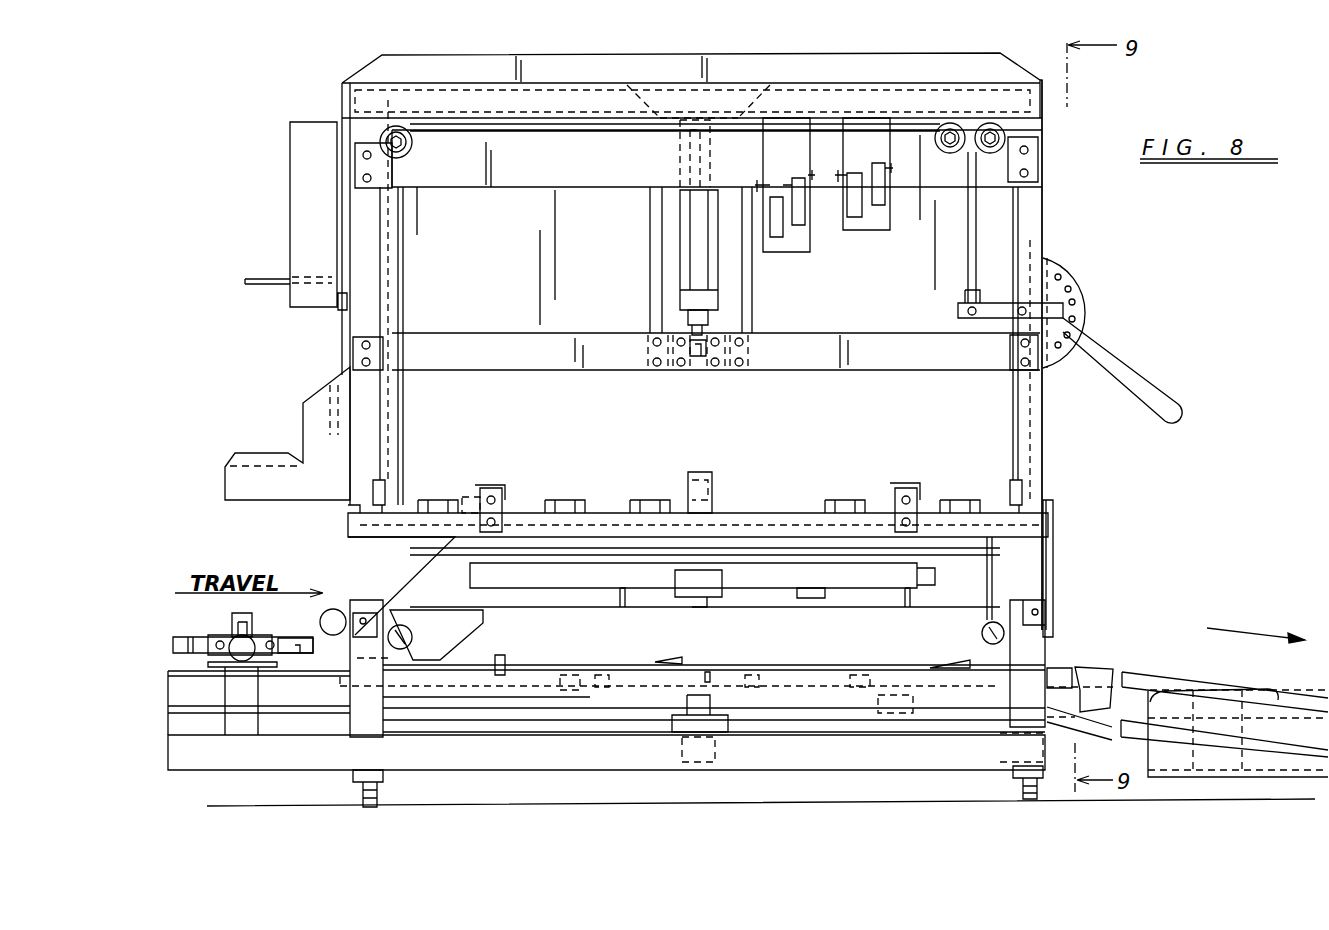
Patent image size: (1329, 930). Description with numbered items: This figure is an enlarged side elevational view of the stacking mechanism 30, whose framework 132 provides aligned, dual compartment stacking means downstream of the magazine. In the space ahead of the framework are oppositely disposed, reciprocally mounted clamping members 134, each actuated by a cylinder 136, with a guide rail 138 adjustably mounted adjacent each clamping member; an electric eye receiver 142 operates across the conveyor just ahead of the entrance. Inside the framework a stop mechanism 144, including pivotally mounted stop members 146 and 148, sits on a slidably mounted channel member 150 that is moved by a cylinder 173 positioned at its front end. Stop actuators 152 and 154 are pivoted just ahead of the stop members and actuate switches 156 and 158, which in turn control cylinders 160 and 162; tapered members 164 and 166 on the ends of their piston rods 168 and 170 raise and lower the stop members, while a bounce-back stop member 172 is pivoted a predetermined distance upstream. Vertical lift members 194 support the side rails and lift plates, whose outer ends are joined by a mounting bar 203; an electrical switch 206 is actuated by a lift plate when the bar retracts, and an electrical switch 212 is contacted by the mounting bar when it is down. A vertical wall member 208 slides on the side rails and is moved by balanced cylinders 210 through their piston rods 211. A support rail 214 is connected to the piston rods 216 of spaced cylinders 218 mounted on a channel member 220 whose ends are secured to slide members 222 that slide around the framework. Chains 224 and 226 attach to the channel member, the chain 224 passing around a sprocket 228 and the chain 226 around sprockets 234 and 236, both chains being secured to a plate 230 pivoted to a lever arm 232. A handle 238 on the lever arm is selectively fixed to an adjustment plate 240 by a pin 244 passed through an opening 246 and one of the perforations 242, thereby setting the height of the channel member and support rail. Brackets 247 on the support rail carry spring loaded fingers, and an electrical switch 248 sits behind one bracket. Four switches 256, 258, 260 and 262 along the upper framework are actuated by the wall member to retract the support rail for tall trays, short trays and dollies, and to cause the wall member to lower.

The stacking mechanism 30 is at (1070, 114).
The framework 132 is at (1042, 62).
The clamping member 134 is at (192, 634).
The hydraulic or pneumatic cylinder 136 is at (237, 645).
The guide rail 138 is at (318, 642).
The receiver 142 is at (335, 608).
The stop mechanism 144 is at (811, 655).
The stop member 146 is at (690, 677).
The stop member 148 is at (1020, 665).
The channel member 150 is at (530, 717).
The stop actuator 152 is at (680, 660).
The stop actuator 154 is at (955, 662).
The switch 156 is at (592, 668).
The switch 158 is at (850, 673).
The hydraulic or pneumatic cylinder 160 is at (762, 693).
The hydraulic or pneumatic cylinder 162 is at (1047, 675).
The tapered member 164 is at (707, 677).
The tapered member 166 is at (1030, 660).
The piston rod 168 is at (723, 677).
The piston rod 170 is at (1068, 707).
The bounce-back stop member 172 is at (502, 660).
The hydraulic or pneumatic cylinder 173 is at (428, 697).
The vertical lift member 194 is at (993, 440).
The mounting bar 203 is at (705, 578).
The electrical switch 206 is at (813, 600).
The wall member 208 is at (630, 298).
The hydraulic or pneumatic cylinder 210 is at (693, 214).
The piston rod 211 is at (700, 330).
The electrical switch 212 is at (900, 720).
The support rail 214 is at (633, 502).
The piston rod 216 is at (713, 477).
The cylinder 218 is at (707, 477).
The channel member 220 is at (587, 522).
The slide member 222 is at (1027, 503).
The chain 224 is at (1018, 219).
The chain 226 is at (382, 233).
The sprocket 228 is at (1003, 130).
The plate 230 is at (966, 298).
The lever arm 232 is at (1057, 300).
The sprocket 234 is at (405, 150).
The sprocket 236 is at (957, 123).
The handle 238 is at (1150, 392).
The adjustment plate 240 is at (1061, 362).
The perforation 242 is at (1057, 352).
The pin 244 is at (1075, 323).
The opening 246 is at (1078, 319).
The bracket 247 is at (500, 492).
The electrical switch 248 is at (467, 500).
The electrical switch 256 is at (775, 232).
The electrical switch 258 is at (793, 226).
The electrical switch 260 is at (858, 218).
The electrical switch 262 is at (880, 192).